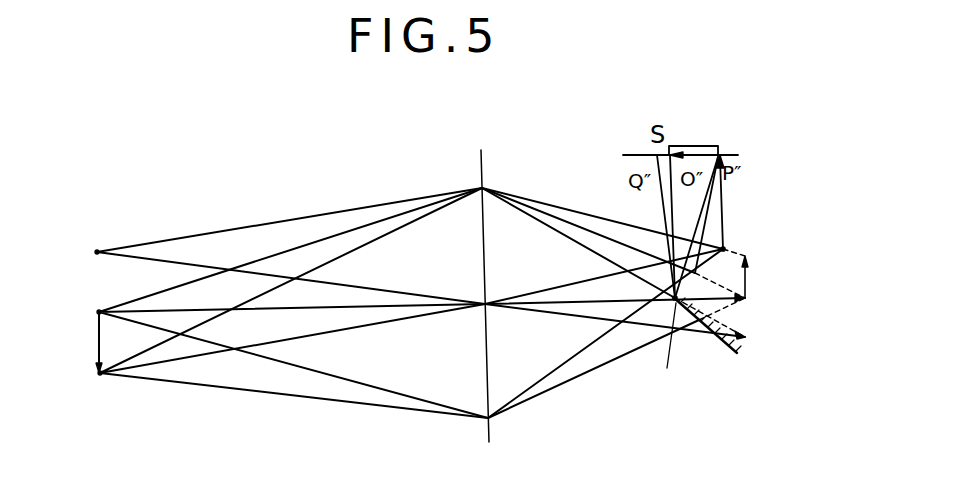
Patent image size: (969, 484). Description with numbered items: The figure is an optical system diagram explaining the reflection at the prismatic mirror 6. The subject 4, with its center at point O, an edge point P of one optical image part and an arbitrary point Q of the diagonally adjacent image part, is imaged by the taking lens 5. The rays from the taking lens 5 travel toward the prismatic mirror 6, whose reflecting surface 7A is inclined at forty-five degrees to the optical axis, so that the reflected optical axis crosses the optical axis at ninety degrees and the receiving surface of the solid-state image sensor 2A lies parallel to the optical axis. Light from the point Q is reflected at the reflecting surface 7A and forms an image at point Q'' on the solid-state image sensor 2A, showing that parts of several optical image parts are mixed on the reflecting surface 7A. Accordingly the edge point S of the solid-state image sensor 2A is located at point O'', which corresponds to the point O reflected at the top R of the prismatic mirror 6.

The subject 4 is at (98, 343).
The taking lens 5 is at (489, 433).
The prismatic mirror 6 is at (728, 243).
The reflecting surface 7A is at (723, 247).
The solid-state image sensor 2A is at (697, 146).